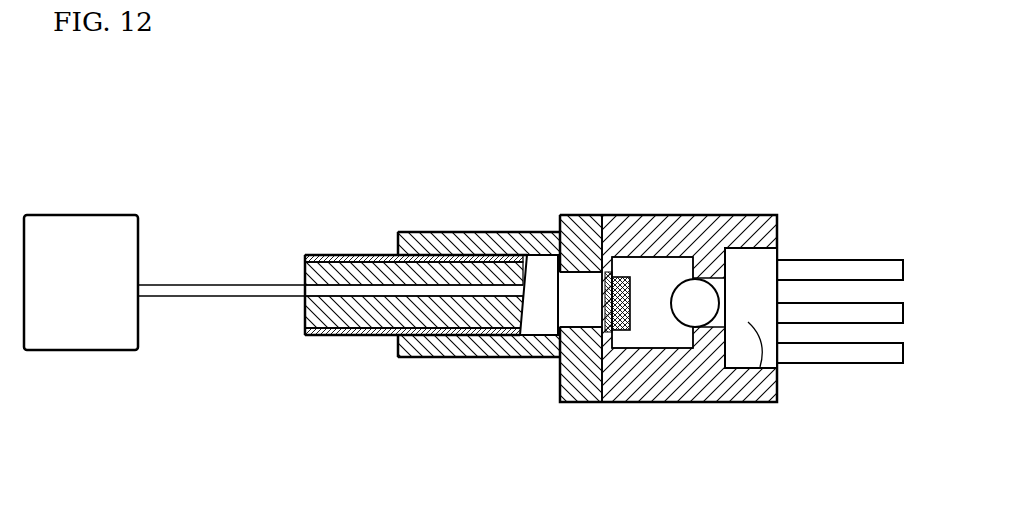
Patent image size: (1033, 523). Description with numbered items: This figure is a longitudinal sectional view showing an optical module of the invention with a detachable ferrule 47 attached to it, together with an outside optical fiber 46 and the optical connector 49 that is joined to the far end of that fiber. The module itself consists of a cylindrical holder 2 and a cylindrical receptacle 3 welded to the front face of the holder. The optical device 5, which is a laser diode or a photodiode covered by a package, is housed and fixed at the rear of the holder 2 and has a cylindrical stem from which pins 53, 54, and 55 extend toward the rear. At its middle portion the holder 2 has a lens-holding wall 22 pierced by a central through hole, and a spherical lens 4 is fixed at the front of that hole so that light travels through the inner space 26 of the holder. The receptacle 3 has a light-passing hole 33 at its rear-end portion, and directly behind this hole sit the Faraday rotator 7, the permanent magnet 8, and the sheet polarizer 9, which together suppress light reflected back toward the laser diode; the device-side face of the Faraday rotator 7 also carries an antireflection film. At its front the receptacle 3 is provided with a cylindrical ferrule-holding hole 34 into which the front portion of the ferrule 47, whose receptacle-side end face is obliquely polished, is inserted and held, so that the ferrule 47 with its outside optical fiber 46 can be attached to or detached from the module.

The holder 2 is at (676, 222).
The receptacle 3 is at (506, 243).
The spherical lens 4 is at (695, 303).
The optical device 5 is at (744, 403).
The Faraday rotator 7 is at (652, 305).
The permanent magnet 8 is at (618, 277).
The sheet polarizer 9 is at (605, 297).
The lens-holding wall 22 is at (737, 248).
The inner space 26 is at (664, 325).
The light-passing hole 33 is at (585, 283).
The ferrule-holding hole 34 is at (535, 304).
The outside optical fiber 46 is at (218, 289).
The ferrule 47 is at (350, 254).
The optical connector 49 is at (81, 282).
The pin 53 is at (829, 265).
The pin 54 is at (845, 313).
The pin 55 is at (824, 348).